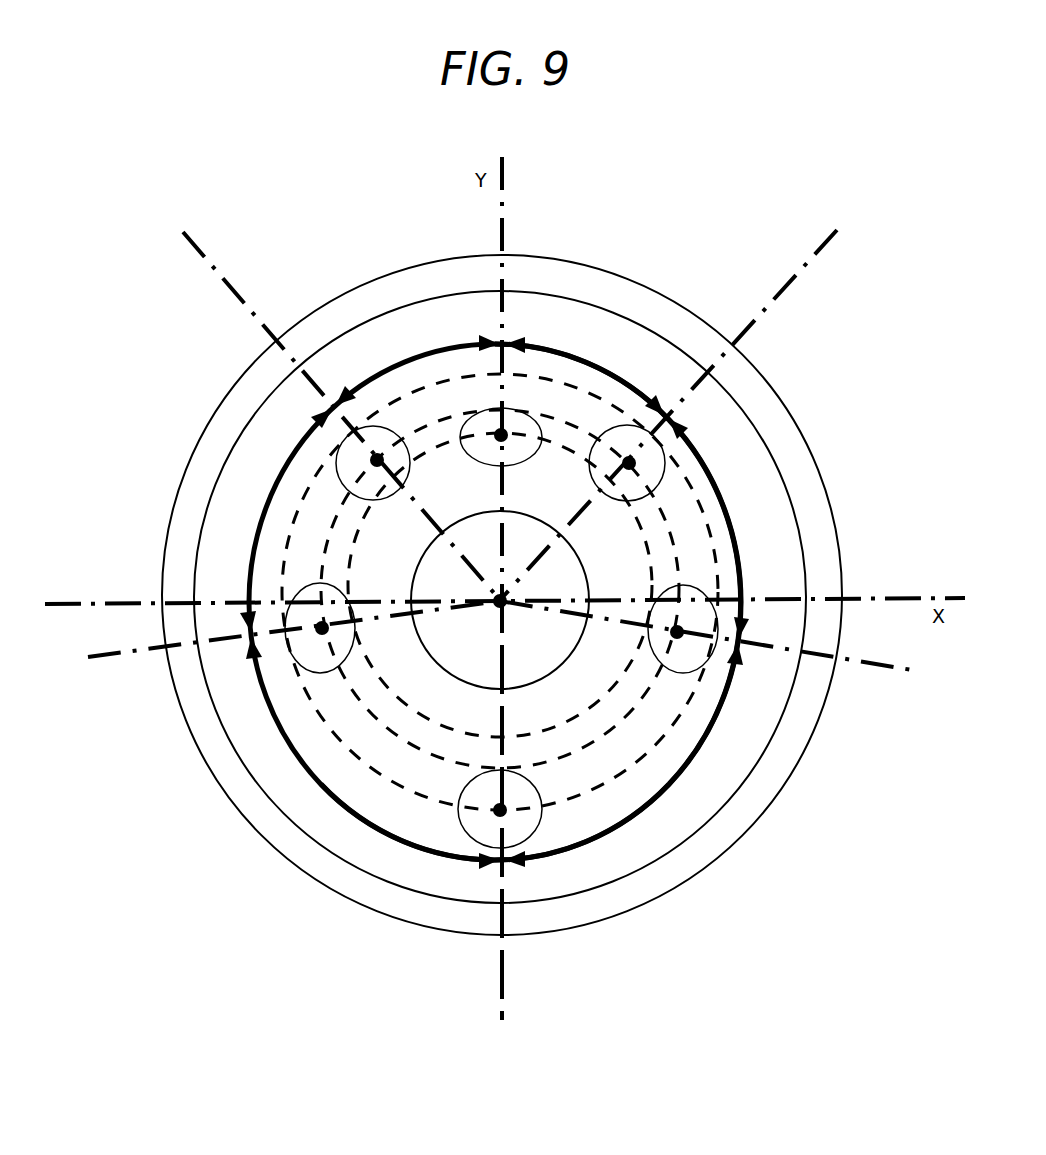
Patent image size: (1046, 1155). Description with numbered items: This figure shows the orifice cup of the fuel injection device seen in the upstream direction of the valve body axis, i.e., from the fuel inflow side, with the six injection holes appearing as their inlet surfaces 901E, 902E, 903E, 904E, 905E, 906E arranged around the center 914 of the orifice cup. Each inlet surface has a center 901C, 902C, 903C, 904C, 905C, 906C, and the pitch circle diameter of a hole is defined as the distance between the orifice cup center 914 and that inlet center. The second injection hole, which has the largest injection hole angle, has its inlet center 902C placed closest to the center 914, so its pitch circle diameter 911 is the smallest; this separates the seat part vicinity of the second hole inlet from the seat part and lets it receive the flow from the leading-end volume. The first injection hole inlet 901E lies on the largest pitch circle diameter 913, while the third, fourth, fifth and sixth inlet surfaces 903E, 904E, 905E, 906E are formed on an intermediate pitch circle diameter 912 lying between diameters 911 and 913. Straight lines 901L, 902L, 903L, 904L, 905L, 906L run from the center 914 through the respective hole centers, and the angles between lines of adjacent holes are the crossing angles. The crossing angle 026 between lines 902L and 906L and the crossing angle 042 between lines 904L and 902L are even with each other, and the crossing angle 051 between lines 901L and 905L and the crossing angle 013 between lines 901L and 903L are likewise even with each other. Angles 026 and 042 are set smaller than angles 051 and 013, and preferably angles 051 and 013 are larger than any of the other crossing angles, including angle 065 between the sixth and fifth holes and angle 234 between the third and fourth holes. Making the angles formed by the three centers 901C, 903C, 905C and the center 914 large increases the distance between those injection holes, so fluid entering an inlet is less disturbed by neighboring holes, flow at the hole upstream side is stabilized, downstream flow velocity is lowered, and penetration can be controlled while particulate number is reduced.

The straight line 906L is at (276, 381).
The straight line 904L is at (668, 374).
The straight line 905L is at (272, 629).
The straight line 903L is at (727, 690).
The straight line 902L is at (539, 362).
The straight line 901L is at (365, 810).
The injection hole inlet surface 902E is at (564, 345).
The injection hole inlet surface 901E is at (375, 835).
The injection hole inlet surface 906E is at (268, 449).
The injection hole inlet surface 904E is at (745, 461).
The injection hole inlet surface 905E is at (222, 590).
The injection hole inlet surface 903E is at (776, 604).
The center of injection hole inlet surface 902C is at (404, 317).
The center of injection hole inlet surface 906C is at (283, 406).
The center of injection hole inlet surface 904C is at (787, 407).
The center of injection hole inlet surface 905C is at (249, 571).
The center of injection hole inlet surface 903C is at (775, 555).
The center of injection hole inlet surface 901C is at (324, 825).
The crossing angle θ65 065 is at (451, 595).
The crossing angle θ26 026 is at (500, 573).
The crossing angle θ42 042 is at (607, 354).
The crossing angle θ34 234 is at (750, 602).
The crossing angle θ13 013 is at (684, 789).
The crossing angle θ51 051 is at (288, 822).
The pitch circle diameter 911 is at (500, 732).
The pitch circle diameter 912 is at (500, 694).
The pitch circle diameter 913 is at (500, 659).
The center of the orifice cup 914 is at (346, 646).